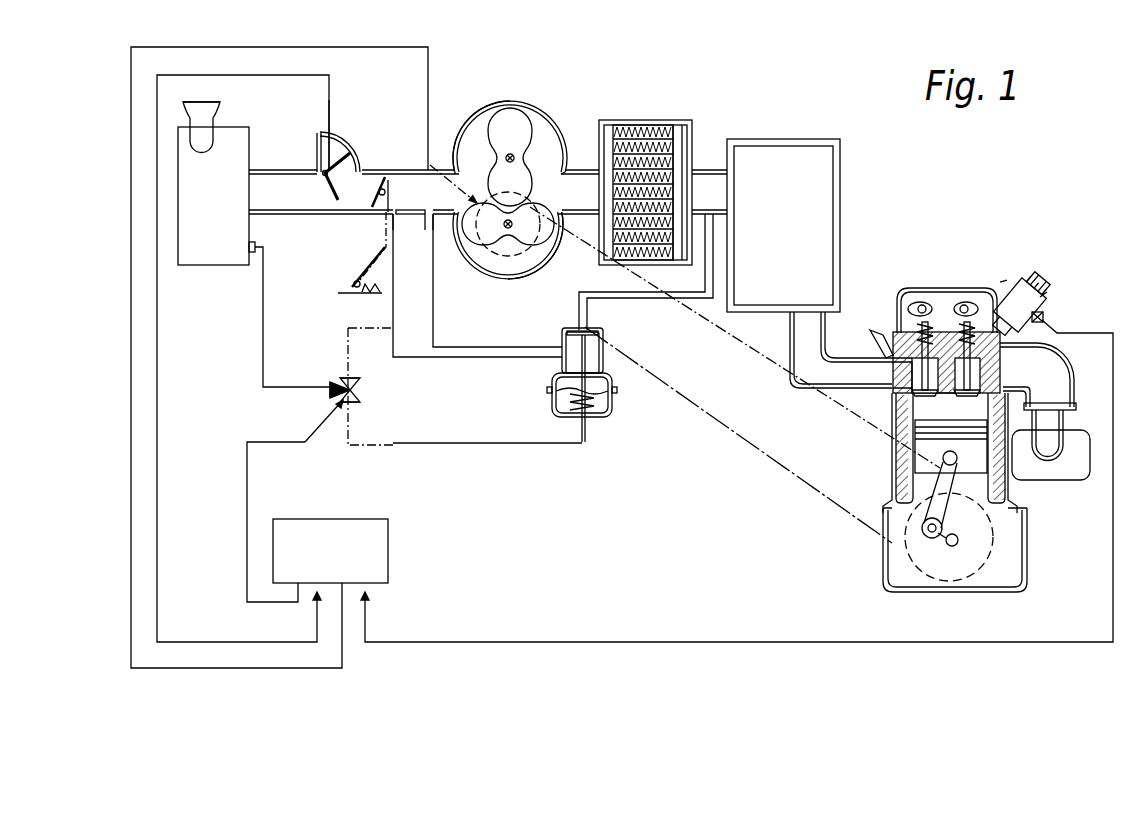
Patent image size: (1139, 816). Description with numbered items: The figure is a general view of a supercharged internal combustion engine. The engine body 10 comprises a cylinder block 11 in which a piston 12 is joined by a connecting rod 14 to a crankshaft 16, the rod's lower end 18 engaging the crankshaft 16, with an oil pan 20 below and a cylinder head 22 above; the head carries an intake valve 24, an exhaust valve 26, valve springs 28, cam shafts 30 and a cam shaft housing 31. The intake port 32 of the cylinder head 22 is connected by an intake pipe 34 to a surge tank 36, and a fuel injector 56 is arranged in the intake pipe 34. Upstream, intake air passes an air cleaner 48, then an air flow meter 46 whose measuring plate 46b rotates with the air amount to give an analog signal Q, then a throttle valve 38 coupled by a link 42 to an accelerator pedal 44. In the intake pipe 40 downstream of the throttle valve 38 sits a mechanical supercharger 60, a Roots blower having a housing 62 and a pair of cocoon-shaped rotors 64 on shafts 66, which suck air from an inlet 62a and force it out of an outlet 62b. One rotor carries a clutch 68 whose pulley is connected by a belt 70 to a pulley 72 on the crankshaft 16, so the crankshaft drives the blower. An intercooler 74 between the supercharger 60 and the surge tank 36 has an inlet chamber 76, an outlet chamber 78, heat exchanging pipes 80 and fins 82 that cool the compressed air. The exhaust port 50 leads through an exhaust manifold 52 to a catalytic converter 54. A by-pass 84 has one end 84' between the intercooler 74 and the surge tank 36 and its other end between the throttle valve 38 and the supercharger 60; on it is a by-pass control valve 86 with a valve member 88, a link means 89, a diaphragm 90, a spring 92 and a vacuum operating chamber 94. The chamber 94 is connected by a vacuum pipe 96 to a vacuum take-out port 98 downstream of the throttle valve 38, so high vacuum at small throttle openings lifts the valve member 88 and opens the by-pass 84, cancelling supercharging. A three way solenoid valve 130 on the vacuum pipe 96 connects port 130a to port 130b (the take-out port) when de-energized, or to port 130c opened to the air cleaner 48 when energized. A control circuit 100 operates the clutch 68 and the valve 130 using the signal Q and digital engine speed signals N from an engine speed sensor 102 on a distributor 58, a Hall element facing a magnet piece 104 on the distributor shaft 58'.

The engine body 10 is at (1027, 565).
The cylinder block 11 is at (1010, 490).
The piston 12 is at (915, 465).
The connecting rod 14 is at (967, 525).
The crankshaft 16 is at (955, 548).
The crank pin 18 is at (922, 530).
The oil pan 20 is at (903, 586).
The cylinder head 22 is at (893, 337).
The intake valve 24 is at (930, 373).
The exhaust valve 26 is at (968, 373).
The valve springs 28 is at (945, 333).
The cam shafts 30 is at (922, 305).
The cam shaft housing 31 is at (973, 290).
The intake port 32 is at (910, 370).
The intake pipe 34 is at (789, 334).
The surge tank 36 is at (797, 139).
The throttle valve 38 is at (386, 177).
The intake pipe 40 is at (447, 168).
The link 42 is at (375, 236).
The accelerator pedal 44 is at (352, 272).
The air flow meter 46 is at (340, 133).
The measuring plate 46b is at (345, 150).
The air cleaner 48 is at (210, 265).
The exhaust port 50 is at (1043, 352).
The exhaust manifold 52 is at (1070, 380).
The catalytic converter 54 is at (1085, 470).
The fuel injector 56 is at (876, 348).
The distributor 58 is at (1036, 288).
The distributor shaft 58' is at (1074, 285).
The mechanical supercharger 60 is at (538, 103).
The housing 62 is at (553, 127).
The inlet 62a is at (466, 150).
The outlet 62b is at (563, 187).
The rotors 64 is at (508, 115).
The shafts 66 is at (508, 156).
The clutch 68 is at (512, 270).
The belt 70 is at (720, 425).
The pulley 72 is at (945, 588).
The intercooler 74 is at (662, 118).
The inlet chamber 76 is at (607, 120).
The outlet chamber 78 is at (690, 124).
The heat exchanging pipes 80 is at (635, 125).
The fins 82 is at (680, 125).
The by-pass 84 is at (477, 308).
The by-pass end 84' is at (654, 256).
The by-pass control valve 86 is at (597, 424).
The valve member 88 is at (562, 338).
The link means 89 is at (582, 350).
The diaphragm 90 is at (612, 390).
The spring 92 is at (612, 413).
The vacuum operating chamber 94 is at (553, 412).
The vacuum pipe 96 is at (500, 443).
The vacuum take-out port 98 is at (405, 216).
The control circuit 100 is at (388, 540).
The engine speed sensor 102 is at (1050, 318).
The magnet piece 104 is at (1007, 280).
The three way solenoid valve 130 is at (328, 374).
The port 130a is at (345, 405).
The port 130b is at (358, 385).
The port 130c is at (334, 390).
The digital signals N is at (737, 481).
The analog signal Q is at (318, 127).